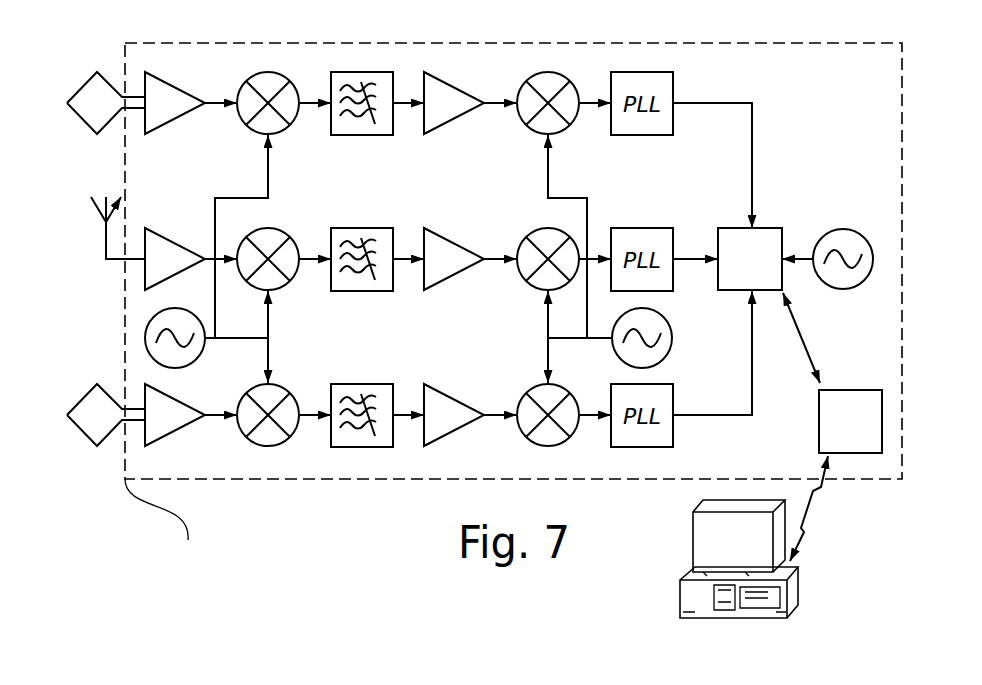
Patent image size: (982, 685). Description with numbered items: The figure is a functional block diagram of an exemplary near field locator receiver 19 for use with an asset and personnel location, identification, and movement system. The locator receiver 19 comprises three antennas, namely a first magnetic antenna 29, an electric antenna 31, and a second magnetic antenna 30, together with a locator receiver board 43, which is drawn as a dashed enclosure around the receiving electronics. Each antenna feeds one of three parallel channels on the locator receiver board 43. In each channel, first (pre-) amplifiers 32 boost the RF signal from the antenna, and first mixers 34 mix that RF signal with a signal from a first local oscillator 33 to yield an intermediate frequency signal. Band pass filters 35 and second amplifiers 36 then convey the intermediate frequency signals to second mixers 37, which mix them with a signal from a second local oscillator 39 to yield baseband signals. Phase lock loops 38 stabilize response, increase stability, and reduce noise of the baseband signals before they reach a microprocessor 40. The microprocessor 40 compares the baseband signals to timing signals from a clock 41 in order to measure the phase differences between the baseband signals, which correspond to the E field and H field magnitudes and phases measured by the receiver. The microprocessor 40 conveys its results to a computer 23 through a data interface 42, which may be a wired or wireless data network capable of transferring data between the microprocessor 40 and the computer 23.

The near field locator receiver 19 is at (160, 526).
The computer 23 is at (792, 592).
The first magnetic antenna 29 is at (123, 97).
The second magnetic antenna 30 is at (100, 443).
The electric antenna 31 is at (97, 214).
The first (pre-) amplifiers 32 is at (167, 80).
The local oscillator 33 is at (206, 259).
The first mixers 34 is at (270, 67).
The band pass filters 35 is at (368, 70).
The second amplifiers 36 is at (447, 80).
The second mixers 37 is at (548, 70).
The phase lock loops 38 is at (647, 70).
The oscillator 39 is at (670, 332).
The microprocessor 40 is at (767, 228).
The clock 41 is at (840, 228).
The data interface 42 is at (868, 388).
The locator receiver board 43 is at (757, 43).